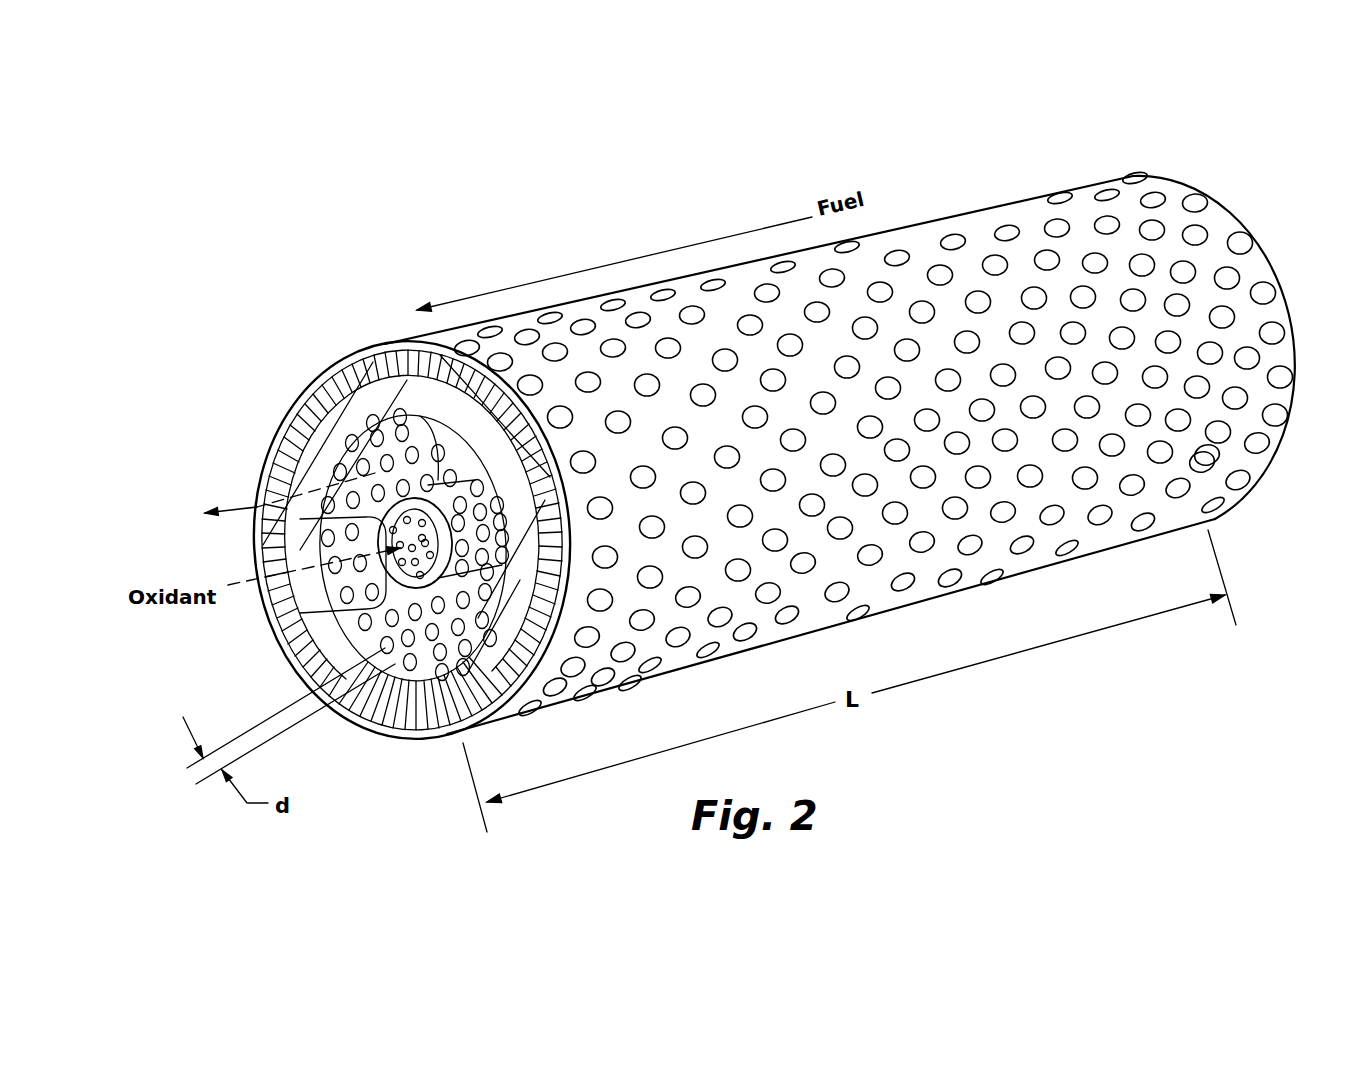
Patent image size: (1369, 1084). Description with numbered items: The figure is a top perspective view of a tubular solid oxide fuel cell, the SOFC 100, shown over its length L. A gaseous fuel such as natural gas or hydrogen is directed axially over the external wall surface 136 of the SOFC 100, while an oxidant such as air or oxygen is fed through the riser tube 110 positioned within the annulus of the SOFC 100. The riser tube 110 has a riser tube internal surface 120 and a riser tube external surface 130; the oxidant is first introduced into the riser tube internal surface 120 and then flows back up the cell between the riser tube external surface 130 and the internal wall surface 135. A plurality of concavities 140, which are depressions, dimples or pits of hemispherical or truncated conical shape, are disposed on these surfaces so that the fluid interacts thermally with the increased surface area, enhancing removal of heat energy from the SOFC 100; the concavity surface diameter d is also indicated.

The solid oxide fuel cell 100 is at (705, 447).
The riser tube 110 is at (380, 617).
The riser tube internal surface 120 is at (300, 526).
The riser tube external surface 130 is at (462, 545).
The internal wall surface 135 is at (297, 407).
The external wall surface 136 is at (988, 206).
The concavities 140 is at (276, 430).